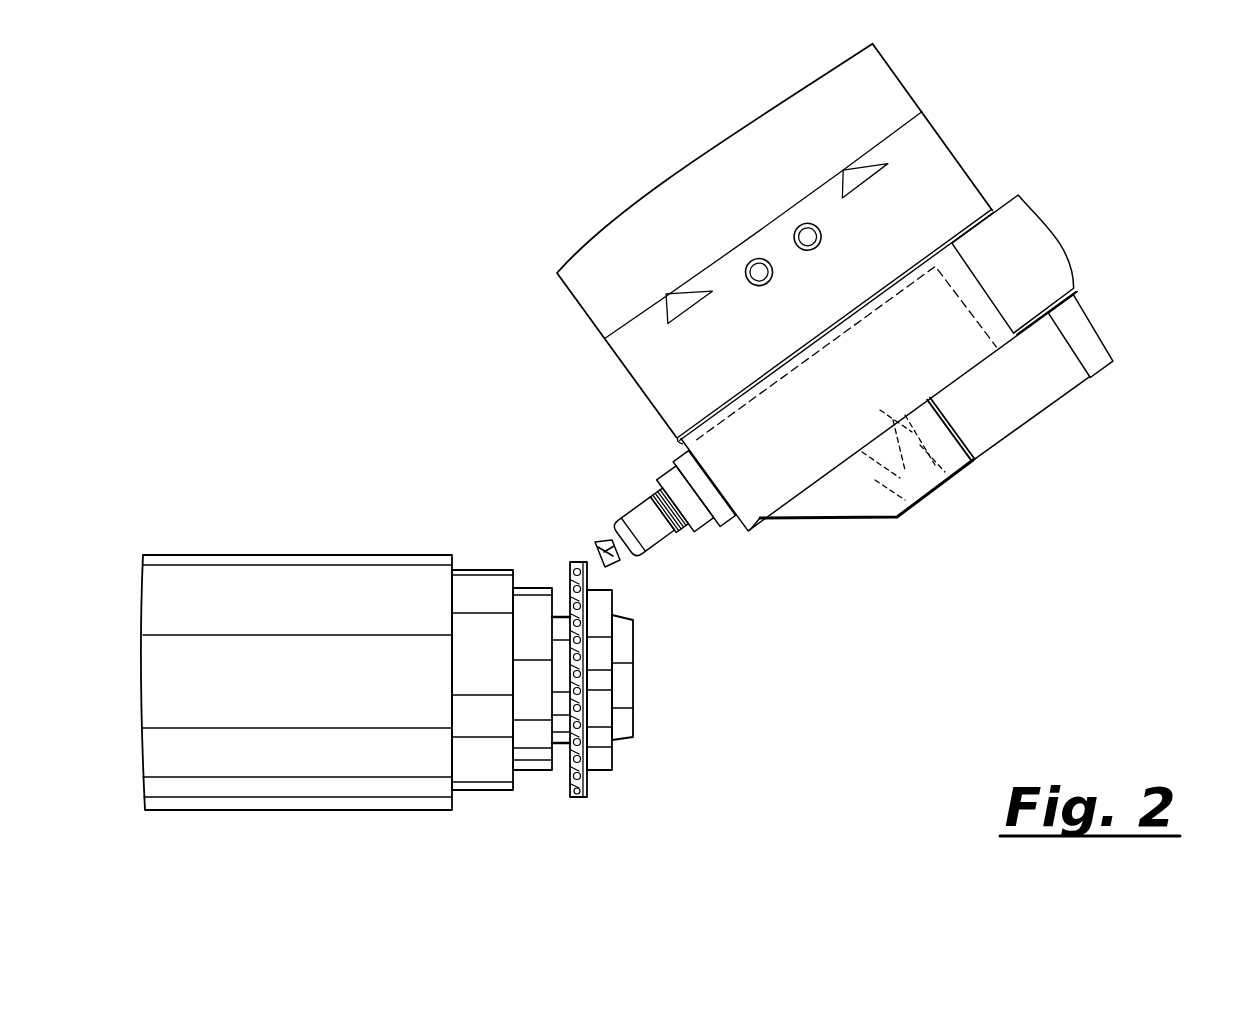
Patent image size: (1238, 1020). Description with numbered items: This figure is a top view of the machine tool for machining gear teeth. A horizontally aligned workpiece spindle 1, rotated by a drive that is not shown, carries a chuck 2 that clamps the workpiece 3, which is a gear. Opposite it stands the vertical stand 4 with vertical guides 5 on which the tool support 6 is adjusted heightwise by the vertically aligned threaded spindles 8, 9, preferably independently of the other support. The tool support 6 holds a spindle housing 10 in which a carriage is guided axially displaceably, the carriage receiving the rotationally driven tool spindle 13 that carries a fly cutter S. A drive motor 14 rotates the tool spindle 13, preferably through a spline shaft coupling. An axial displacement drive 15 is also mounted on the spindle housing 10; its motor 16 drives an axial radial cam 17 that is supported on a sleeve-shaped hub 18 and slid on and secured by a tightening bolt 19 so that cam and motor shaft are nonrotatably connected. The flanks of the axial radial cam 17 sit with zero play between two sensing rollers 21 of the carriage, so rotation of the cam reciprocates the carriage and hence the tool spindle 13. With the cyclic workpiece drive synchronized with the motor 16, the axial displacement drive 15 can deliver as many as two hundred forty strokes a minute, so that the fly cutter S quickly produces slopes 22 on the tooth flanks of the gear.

The workpiece spindle 1 is at (417, 758).
The chuck 2 is at (528, 733).
The workpiece 3 is at (597, 745).
The vertical stand 4 is at (1015, 58).
The vertical guides 5 is at (865, 173).
The tool support 6 is at (1073, 120).
The threaded spindle 8 is at (758, 268).
The threaded spindle 9 is at (807, 230).
The spindle housing 10 is at (925, 598).
The tool spindle 13 is at (848, 645).
The drive motor 14 is at (1100, 163).
The axial displacement drive 15 is at (1087, 382).
The motor 16 is at (1135, 245).
The axial radial cam 17 is at (980, 447).
The sleeve-shaped hub 18 is at (950, 433).
The tightening bolt 19 is at (900, 522).
The sensing rollers 21 is at (950, 413).
The slopes 22 is at (577, 637).
The fly cutter S is at (600, 545).